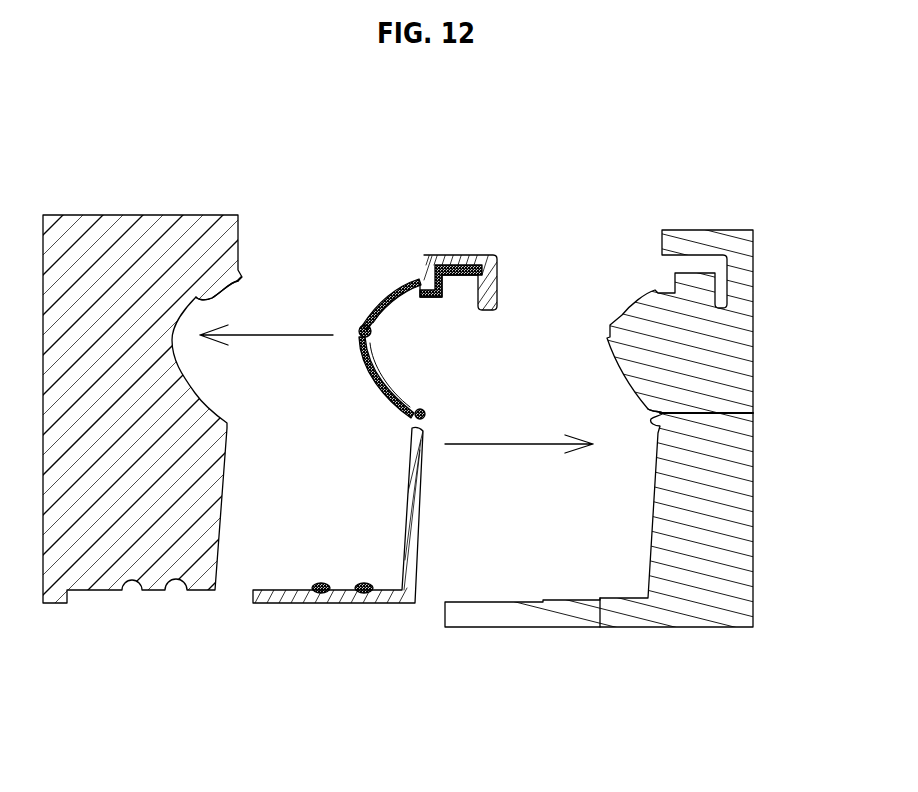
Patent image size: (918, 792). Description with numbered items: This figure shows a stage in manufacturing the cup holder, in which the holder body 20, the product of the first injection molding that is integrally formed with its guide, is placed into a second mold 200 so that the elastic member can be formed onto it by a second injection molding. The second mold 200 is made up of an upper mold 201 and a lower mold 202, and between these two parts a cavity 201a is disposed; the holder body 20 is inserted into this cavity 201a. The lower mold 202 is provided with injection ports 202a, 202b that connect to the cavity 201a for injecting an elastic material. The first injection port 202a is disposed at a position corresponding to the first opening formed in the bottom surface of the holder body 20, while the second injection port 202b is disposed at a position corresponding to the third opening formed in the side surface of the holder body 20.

The second mold 200 is at (500, 107).
The upper mold 201 is at (207, 222).
The cavity 201a is at (222, 293).
The holder body 20 is at (458, 258).
The lower mold 202 is at (748, 318).
The first injection port 202a is at (600, 627).
The second injection port 202b is at (753, 413).